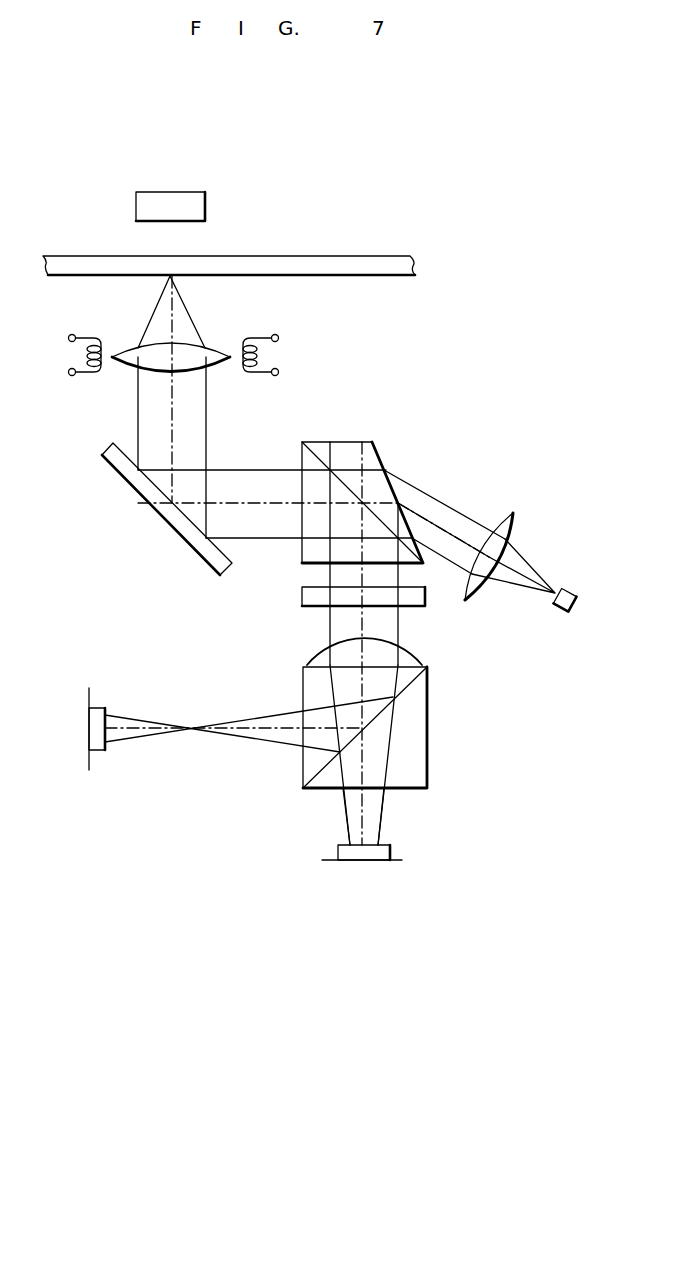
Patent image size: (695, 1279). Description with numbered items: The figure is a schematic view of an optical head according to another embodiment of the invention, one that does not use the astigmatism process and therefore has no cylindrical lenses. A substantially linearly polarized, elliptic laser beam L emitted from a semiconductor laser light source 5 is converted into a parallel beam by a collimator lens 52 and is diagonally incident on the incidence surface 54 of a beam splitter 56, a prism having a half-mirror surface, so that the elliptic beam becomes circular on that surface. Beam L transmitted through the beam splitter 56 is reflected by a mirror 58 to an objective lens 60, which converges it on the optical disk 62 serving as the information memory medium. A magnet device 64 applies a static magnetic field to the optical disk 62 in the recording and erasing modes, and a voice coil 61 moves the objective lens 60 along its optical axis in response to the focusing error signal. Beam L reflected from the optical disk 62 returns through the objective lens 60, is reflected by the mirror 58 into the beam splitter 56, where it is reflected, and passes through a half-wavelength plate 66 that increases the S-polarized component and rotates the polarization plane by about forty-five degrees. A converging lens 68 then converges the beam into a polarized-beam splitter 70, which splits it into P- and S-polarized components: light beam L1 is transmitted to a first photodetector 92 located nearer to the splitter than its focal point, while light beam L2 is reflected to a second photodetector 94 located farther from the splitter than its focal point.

The magnet device 64 is at (205, 204).
The optical disk 62 is at (333, 255).
The voice coil 61 is at (86, 319).
The objective lens 60 is at (212, 347).
The mirror 58 is at (137, 487).
The beam splitter 56 is at (355, 442).
The incidence surface 54 is at (380, 452).
The laser beam L is at (445, 506).
The collimator lens 52 is at (515, 514).
The photodetector 5 is at (575, 588).
The half-wavelength plate 66 is at (302, 595).
The converging lens 68 is at (413, 656).
The polarized-beam splitter 70 is at (428, 713).
The light beam L2 is at (245, 740).
The second photodetector 94 is at (97, 752).
The light beam L1 is at (380, 828).
The first photodetector 92 is at (382, 860).